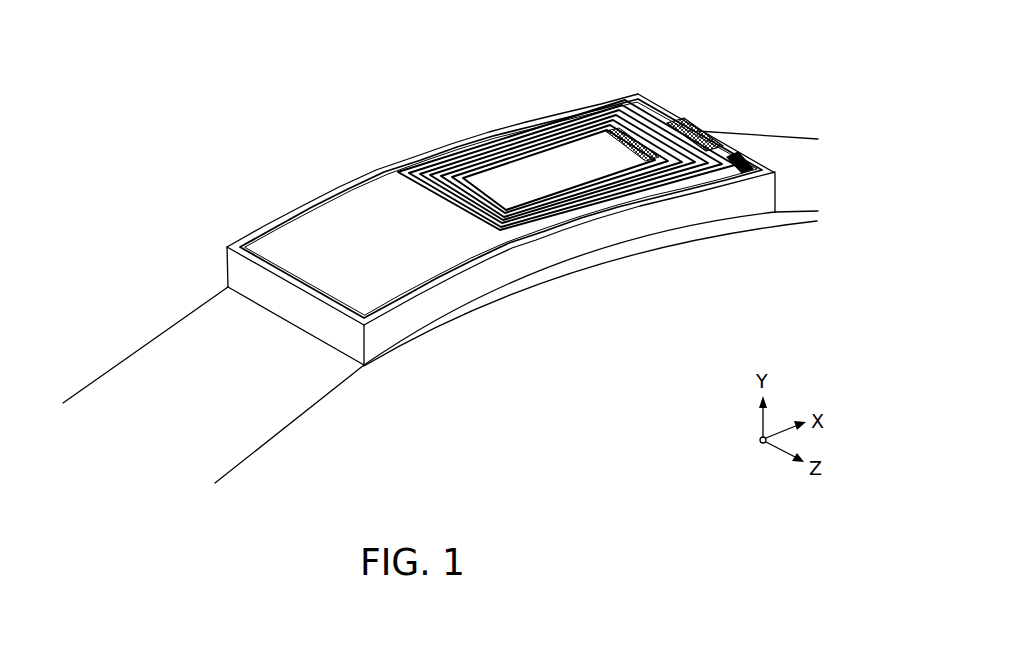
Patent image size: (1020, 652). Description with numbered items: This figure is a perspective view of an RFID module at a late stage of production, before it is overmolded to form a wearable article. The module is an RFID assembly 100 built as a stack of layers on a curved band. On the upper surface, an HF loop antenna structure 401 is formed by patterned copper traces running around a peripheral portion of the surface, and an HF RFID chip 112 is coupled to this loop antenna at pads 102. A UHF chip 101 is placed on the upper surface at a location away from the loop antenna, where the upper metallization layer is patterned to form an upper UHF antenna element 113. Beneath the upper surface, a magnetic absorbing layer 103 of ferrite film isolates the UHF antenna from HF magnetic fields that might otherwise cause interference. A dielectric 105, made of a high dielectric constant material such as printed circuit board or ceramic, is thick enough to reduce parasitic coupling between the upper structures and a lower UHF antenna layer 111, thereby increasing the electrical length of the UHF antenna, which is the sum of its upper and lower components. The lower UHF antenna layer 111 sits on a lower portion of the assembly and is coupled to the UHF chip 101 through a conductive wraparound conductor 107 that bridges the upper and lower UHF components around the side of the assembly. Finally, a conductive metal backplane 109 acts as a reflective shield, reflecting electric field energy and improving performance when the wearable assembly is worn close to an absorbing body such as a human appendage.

The RFID assembly 100 is at (274, 132).
The UHF chip 101 is at (383, 240).
The pads 102 is at (700, 131).
The magnetic absorbing layer 103 is at (233, 245).
The dielectric 105 is at (566, 258).
The wraparound conductor 107 is at (355, 337).
The conductive metal backplane 109 is at (307, 410).
The lower UHF antenna layer 111 is at (723, 226).
The HF RFID chip 112 is at (750, 160).
The upper UHF antenna element 113 is at (408, 290).
The HF loop antenna structure 401 is at (541, 108).